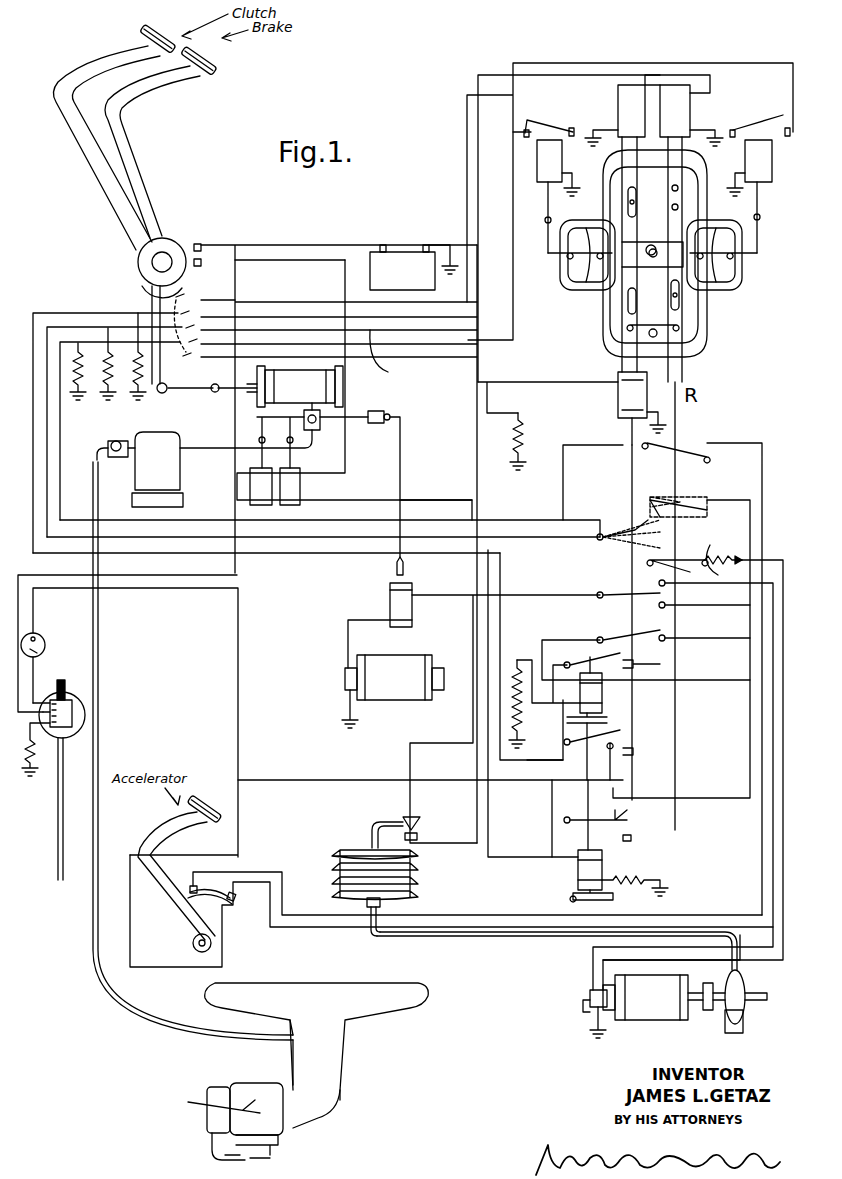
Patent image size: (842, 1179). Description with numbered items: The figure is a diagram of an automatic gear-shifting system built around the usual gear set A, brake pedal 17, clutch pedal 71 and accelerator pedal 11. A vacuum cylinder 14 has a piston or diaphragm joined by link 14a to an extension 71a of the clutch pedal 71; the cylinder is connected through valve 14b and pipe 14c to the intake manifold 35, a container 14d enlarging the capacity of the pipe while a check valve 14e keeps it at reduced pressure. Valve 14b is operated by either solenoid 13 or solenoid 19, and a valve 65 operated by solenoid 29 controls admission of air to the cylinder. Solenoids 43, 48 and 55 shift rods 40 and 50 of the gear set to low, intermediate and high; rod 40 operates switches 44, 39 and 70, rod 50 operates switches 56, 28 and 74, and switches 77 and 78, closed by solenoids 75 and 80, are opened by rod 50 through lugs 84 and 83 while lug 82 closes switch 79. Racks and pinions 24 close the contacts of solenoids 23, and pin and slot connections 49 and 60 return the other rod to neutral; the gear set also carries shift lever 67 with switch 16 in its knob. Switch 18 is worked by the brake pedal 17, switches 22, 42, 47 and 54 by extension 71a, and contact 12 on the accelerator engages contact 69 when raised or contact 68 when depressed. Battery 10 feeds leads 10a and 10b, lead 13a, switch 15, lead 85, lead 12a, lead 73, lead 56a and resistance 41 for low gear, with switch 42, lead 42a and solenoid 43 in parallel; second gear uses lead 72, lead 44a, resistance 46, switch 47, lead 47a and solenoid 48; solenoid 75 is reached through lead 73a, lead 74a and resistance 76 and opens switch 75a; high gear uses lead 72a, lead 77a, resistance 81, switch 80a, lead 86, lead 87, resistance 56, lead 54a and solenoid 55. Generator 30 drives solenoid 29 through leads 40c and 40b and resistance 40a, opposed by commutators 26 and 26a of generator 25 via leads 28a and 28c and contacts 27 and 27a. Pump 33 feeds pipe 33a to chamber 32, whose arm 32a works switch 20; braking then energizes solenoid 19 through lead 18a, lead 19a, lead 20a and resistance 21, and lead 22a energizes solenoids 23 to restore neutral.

The clutch pedal 71 is at (76, 58).
The brake pedal 17 is at (135, 88).
The switch 18 is at (203, 247).
The switch 47 is at (165, 305).
The extension 71a is at (170, 388).
The switch 42 is at (168, 386).
The switch 54 is at (186, 300).
The switch 22 is at (192, 346).
The resistance 41 is at (84, 386).
The resistance 46 is at (116, 386).
The switch / resistance 56 is at (146, 384).
The lead 10a is at (305, 247).
The lead 10b is at (240, 285).
The battery 10 is at (396, 252).
The link 14a is at (204, 392).
The vacuum cylinder 14 is at (295, 386).
The valve 14b is at (316, 432).
The lead 18a is at (346, 403).
The lead 42a is at (393, 352).
The valve 65 is at (380, 410).
The container 14d is at (157, 469).
The check valve 14e is at (114, 458).
The pipe 14c is at (206, 448).
The solenoid 13 is at (250, 486).
The solenoid 19 is at (300, 486).
The lead 19a is at (426, 498).
The lead 13a is at (240, 572).
The lead 54a is at (476, 156).
The lead 22a is at (516, 338).
The solenoid 55 is at (618, 108).
The solenoid 43 is at (690, 108).
The solenoid 23 is at (562, 155).
The gear set A is at (707, 320).
The pin and slot connection 49 is at (654, 200).
The shift lever 67 is at (654, 258).
The pin and slot connection 60 is at (650, 320).
The rack and pinion 24 is at (568, 262).
The rod 50 is at (622, 364).
The rod 40 is at (682, 366).
The solenoid 48 is at (618, 400).
The lead 47a is at (518, 382).
The resistance 21 is at (527, 436).
The switch 44 is at (700, 445).
The lead 44a is at (568, 474).
The lead 56a is at (520, 518).
The switch 39 is at (700, 495).
The lead 72 is at (766, 502).
The lead 73 is at (750, 505).
The switch 70 is at (712, 556).
The resistance 40a is at (764, 560).
The lead 40b is at (560, 562).
The lead 40c is at (510, 590).
The lead 87 is at (503, 640).
The switch 28 is at (620, 593).
The contact 27a is at (668, 585).
The contact 27 is at (668, 606).
The lead 74a is at (558, 638).
The switch 74 is at (628, 632).
The lead 73a is at (690, 640).
The lug 84 is at (640, 664).
The switch 77 is at (600, 655).
The solenoid 75 is at (602, 695).
The resistance 76 is at (524, 720).
The switch 78 is at (607, 728).
The lead 72a is at (683, 682).
The lead 28c is at (782, 705).
The lead 28a is at (773, 738).
The lug 83 is at (636, 751).
The switch 75a is at (545, 748).
The lead 86 is at (335, 778).
The lead 85 is at (240, 660).
The lead 77a is at (556, 806).
The switch 79 is at (600, 818).
The solenoid 80 is at (602, 866).
The lug 82 is at (632, 842).
The resistance 81 is at (648, 876).
The switch 80a is at (618, 898).
The lead 20a is at (492, 838).
The switch 20 is at (420, 830).
The arm 32a is at (368, 828).
The expansible chamber 32 is at (420, 876).
The pipe 33a is at (470, 942).
The solenoid 29 is at (390, 597).
The generator 30 is at (393, 691).
The switch 15 is at (44, 640).
The switch 16 is at (64, 680).
The accelerator pedal 11 is at (168, 886).
The contact 68 is at (185, 905).
The contact 12 is at (214, 893).
The contact 69 is at (234, 902).
The lead 12a is at (258, 870).
The intake manifold 35 is at (308, 1071).
The generator 25 is at (658, 997).
The pump 33 is at (745, 985).
The commutator 26 is at (610, 1000).
The commutator 26a is at (605, 1010).